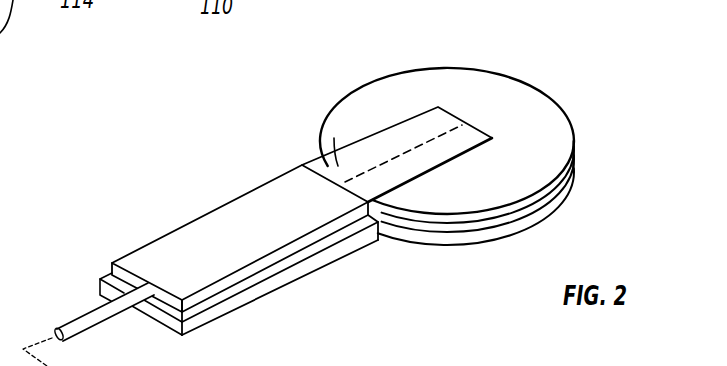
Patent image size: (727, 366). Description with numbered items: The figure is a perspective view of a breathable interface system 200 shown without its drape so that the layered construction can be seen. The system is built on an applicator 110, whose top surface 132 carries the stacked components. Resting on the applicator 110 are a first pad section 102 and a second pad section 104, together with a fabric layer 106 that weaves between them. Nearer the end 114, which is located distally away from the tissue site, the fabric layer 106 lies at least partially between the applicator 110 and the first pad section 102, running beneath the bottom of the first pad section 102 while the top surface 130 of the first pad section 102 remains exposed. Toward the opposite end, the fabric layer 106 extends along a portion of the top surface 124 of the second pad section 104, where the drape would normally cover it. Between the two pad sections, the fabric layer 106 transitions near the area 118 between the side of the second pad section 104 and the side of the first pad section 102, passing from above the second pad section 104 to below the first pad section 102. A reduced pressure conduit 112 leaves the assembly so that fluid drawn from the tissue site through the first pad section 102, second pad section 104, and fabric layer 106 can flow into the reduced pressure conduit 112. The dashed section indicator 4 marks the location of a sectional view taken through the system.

The breathable interface system 200 is at (488, 42).
The top surface of the second pad section 124 is at (470, 84).
The second pad section 104 is at (552, 184).
The fabric layer 106 is at (412, 132).
The top surface of the first pad section 130 is at (180, 244).
The first pad section 102 is at (254, 272).
The applicator 110 is at (213, 312).
The area between the side of the second pad section and the side of the first pad se 118 is at (381, 254).
The top surface of the applicator 132 is at (162, 308).
The reduced pressure conduit 112 is at (78, 322).
The end 114 is at (476, 359).
The section line 4 is at (533, 87).